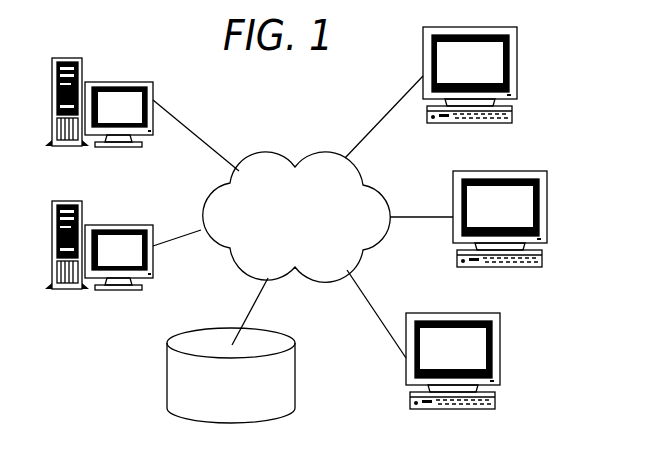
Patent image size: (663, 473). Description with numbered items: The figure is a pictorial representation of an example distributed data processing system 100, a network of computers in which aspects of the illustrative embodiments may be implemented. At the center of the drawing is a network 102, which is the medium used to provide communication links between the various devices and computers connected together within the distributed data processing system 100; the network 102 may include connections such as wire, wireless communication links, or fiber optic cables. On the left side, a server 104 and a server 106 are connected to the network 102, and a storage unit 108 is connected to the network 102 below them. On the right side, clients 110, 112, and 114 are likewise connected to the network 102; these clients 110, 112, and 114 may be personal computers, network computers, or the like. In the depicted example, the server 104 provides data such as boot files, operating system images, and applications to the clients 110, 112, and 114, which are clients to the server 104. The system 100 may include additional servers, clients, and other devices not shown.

The distributed data processing system 100 is at (126, 356).
The network 102 is at (297, 200).
The server 104 is at (115, 82).
The server 106 is at (115, 225).
The storage unit 108 is at (295, 366).
The client 110 is at (517, 65).
The client 112 is at (548, 207).
The client 114 is at (501, 352).